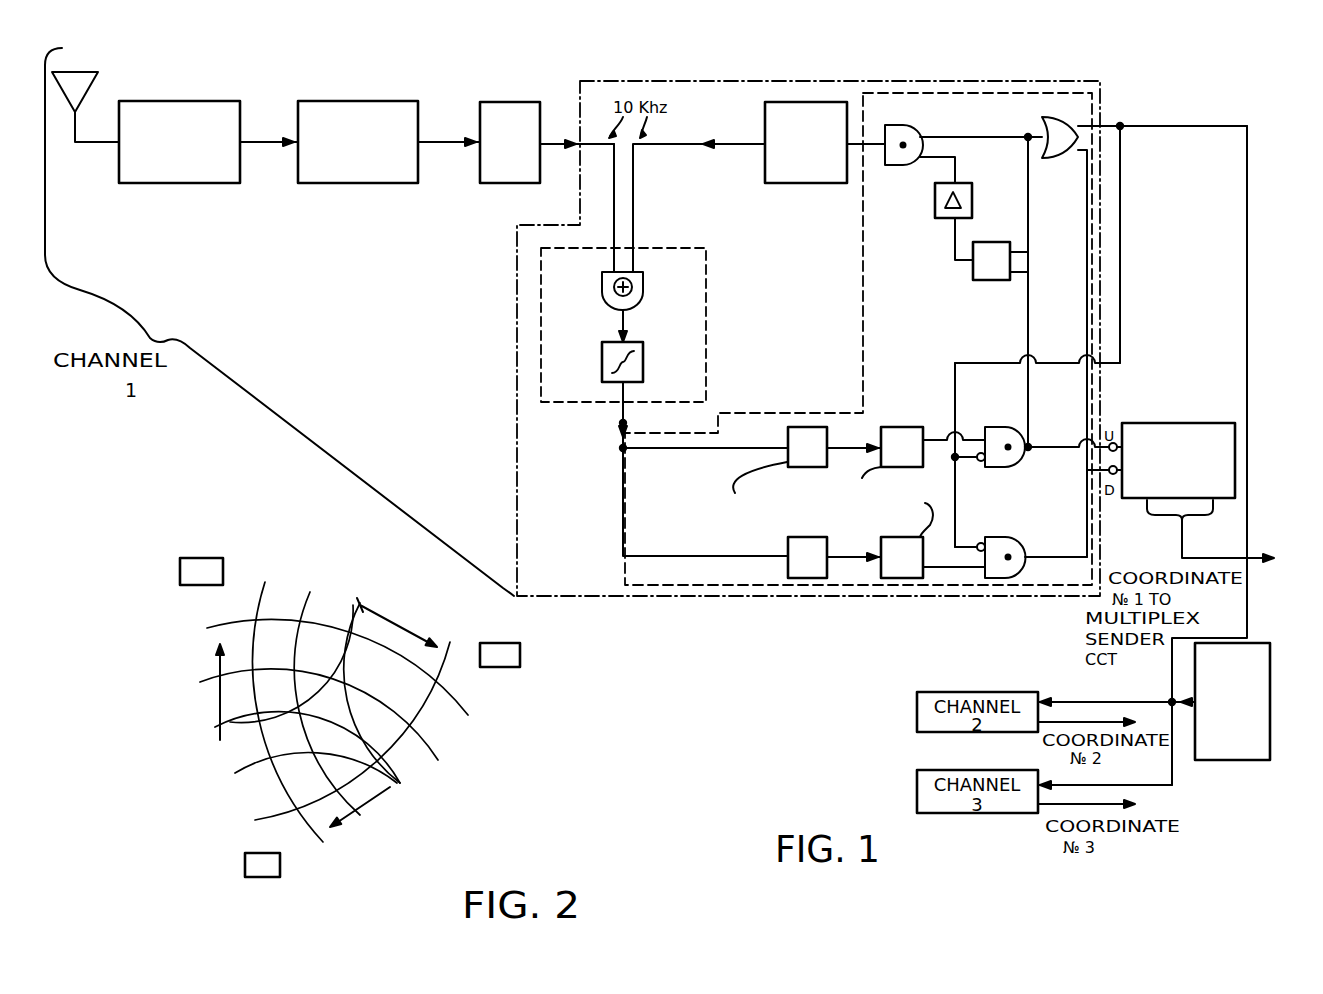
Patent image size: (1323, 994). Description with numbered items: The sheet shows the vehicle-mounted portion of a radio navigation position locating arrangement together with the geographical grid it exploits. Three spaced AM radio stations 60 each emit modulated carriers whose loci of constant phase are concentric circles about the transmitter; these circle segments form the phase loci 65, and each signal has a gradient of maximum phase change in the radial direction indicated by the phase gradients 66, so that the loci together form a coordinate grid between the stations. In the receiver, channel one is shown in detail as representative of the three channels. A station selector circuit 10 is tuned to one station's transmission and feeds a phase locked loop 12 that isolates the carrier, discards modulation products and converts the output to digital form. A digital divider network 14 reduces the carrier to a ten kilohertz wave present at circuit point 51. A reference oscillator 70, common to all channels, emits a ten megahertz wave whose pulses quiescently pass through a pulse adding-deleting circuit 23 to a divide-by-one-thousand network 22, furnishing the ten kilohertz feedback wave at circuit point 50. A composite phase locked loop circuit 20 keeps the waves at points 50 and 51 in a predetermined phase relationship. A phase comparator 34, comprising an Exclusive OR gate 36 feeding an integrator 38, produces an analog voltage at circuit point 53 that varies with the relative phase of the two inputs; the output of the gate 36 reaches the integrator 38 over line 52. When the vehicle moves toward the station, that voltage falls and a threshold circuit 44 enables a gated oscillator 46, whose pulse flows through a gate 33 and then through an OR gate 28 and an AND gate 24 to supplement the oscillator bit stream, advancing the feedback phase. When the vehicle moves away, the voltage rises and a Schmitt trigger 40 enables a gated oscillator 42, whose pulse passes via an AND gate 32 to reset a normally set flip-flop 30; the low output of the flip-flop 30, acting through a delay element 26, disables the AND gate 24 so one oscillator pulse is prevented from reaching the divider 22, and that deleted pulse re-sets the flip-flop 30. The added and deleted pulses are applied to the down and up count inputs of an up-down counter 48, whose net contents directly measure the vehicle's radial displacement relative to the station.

In FIG. 1, the station selector circuit 10 is at (155, 183).
In FIG. 1, the phase locked loop 12 is at (318, 183).
In FIG. 1, the digital divider network 14 is at (493, 183).
In FIG. 1, the composite phase locked loop circuit 20 is at (1046, 80).
In FIG. 1, the divide-by-1000 network 22 is at (818, 185).
In FIG. 1, the pulse adding-deleting circuit 23 is at (620, 573).
In FIG. 1, the AND gate 24 is at (920, 133).
In FIG. 1, the delay element 26 is at (935, 208).
In FIG. 1, the OR gate 28 is at (1048, 122).
In FIG. 1, the flip-flop 30 is at (975, 280).
In FIG. 1, the AND gate 32 is at (1010, 467).
In FIG. 1, the gate 33 is at (1005, 540).
In FIG. 1, the phase comparator 34 is at (541, 352).
In FIG. 1, the Exclusive OR gate 36 is at (645, 290).
In FIG. 1, the integrator or low pass filter 38 is at (645, 365).
In FIG. 1, the Schmitt trigger 40 is at (780, 479).
In FIG. 1, the gated oscillator 42 is at (923, 482).
In FIG. 1, the threshold circuit 44 is at (807, 557).
In FIG. 1, the gated oscillator 46 is at (933, 557).
In FIG. 1, the up-down counter 48 is at (1180, 405).
In FIG. 1, the circuit point 50 is at (635, 183).
In FIG. 1, the circuit point 51 is at (614, 183).
In FIG. 1, the phase detector output line 52 is at (628, 321).
In FIG. 1, the circuit point 53 is at (623, 423).
In FIG. 2, the radio stations 60 is at (180, 571).
In FIG. 2, the phase loci 65 is at (355, 878).
In FIG. 2, the phase gradients 66 is at (377, 816).
In FIG. 1, the reference oscillator 70 is at (1232, 719).